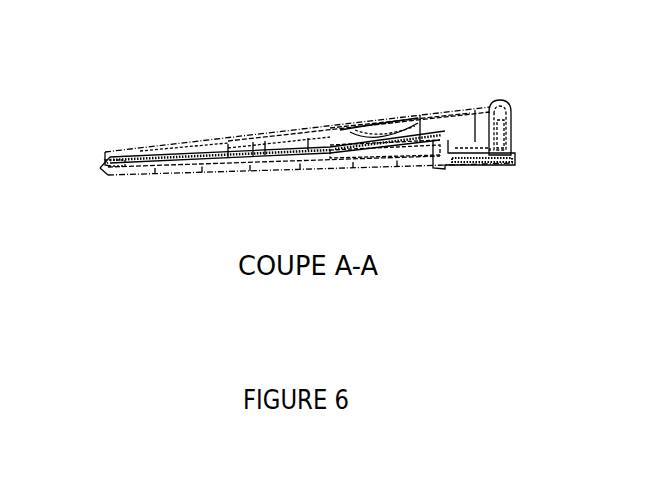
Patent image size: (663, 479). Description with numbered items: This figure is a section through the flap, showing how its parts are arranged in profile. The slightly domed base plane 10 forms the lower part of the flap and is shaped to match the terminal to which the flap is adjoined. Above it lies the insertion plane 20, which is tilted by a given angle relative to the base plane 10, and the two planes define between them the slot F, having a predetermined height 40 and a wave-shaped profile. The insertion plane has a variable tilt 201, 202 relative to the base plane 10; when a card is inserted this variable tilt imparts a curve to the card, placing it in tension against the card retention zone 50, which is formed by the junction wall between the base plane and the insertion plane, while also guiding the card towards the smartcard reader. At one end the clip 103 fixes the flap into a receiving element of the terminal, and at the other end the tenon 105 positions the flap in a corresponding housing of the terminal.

The base plane 10 is at (172, 172).
The insertion plane 20 is at (313, 160).
The predetermined height 40 is at (282, 164).
The card retention zone 50 is at (419, 114).
The clip 103 is at (497, 101).
The tenon 105 is at (104, 165).
The variable tilt 201 is at (376, 160).
The variable tilt 202 is at (410, 159).